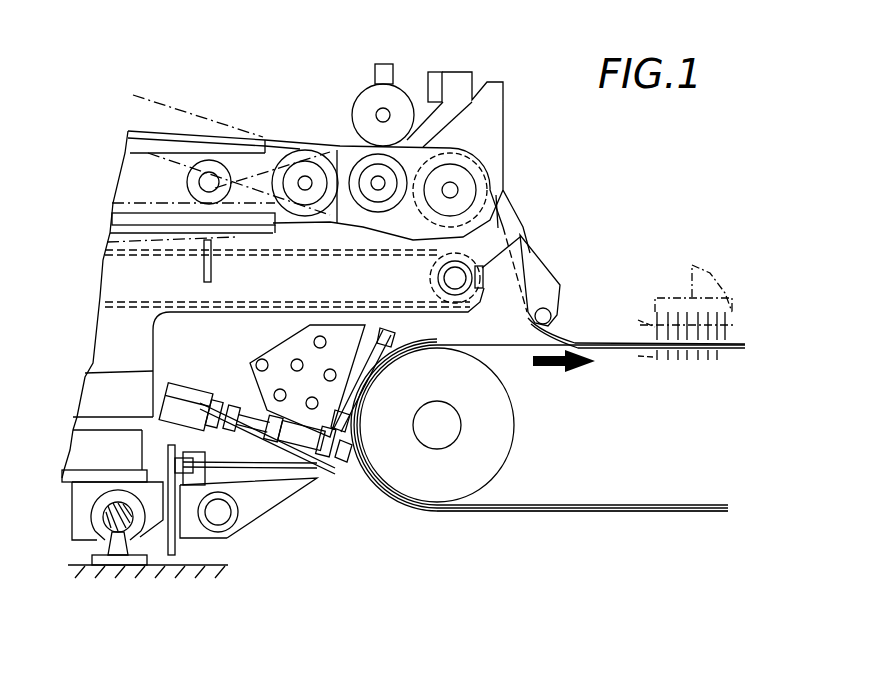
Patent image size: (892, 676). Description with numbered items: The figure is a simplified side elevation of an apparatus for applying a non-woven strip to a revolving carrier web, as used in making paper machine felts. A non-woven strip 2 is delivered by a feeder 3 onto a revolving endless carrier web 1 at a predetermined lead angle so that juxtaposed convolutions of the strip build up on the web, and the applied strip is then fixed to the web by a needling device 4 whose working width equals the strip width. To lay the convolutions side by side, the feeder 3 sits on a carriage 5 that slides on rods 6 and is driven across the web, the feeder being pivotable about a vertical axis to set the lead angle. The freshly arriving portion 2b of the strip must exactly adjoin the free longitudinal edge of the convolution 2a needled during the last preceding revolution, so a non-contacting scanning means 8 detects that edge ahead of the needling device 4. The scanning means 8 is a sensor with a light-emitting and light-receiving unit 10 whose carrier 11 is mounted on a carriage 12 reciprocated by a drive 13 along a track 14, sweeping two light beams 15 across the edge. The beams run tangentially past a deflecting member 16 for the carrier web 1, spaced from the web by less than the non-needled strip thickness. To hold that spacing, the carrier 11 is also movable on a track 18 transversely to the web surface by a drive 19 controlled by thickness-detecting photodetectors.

The carrier web 1 is at (620, 505).
The non-woven strip 2 is at (504, 205).
The convolution 2a is at (590, 513).
The portion of the non-woven web 2b is at (567, 330).
The feeder 3 is at (536, 211).
The needling device 4 is at (672, 305).
The carriage 5 is at (150, 502).
The rods 6 is at (117, 533).
The scanning means 8 is at (350, 475).
The light-emitting and light-receiving unit 10 is at (404, 337).
The carrier 11 is at (302, 350).
The carriage 12 is at (262, 492).
The drive 13 is at (218, 513).
The track 14 is at (180, 483).
The light beams 15 is at (362, 407).
The deflecting member 16 is at (487, 427).
The track 18 is at (293, 447).
The drive 19 is at (187, 403).